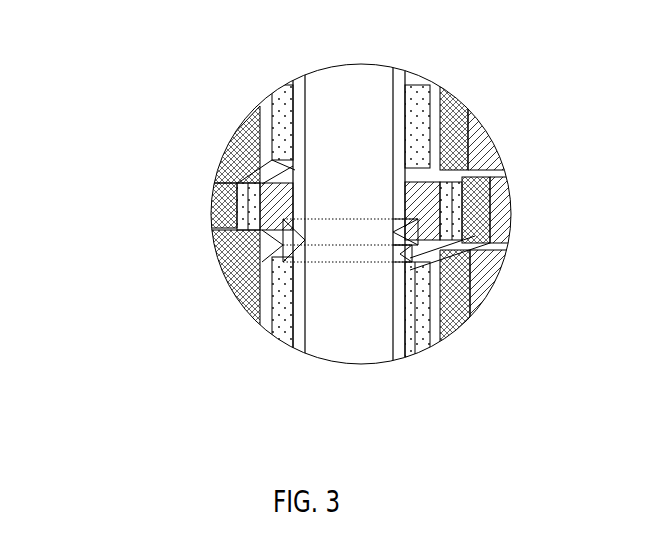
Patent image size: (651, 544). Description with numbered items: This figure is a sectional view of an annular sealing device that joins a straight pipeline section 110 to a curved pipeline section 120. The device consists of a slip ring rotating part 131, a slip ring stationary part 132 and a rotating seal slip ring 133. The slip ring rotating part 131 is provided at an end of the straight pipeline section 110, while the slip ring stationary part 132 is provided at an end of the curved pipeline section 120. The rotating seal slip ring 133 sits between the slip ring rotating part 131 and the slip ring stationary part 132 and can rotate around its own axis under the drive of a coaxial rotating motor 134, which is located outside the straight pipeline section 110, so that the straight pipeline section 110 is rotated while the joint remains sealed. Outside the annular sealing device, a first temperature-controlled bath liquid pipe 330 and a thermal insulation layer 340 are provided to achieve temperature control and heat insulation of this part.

The straight pipeline section 110 is at (336, 131).
The curved pipeline section 120 is at (363, 311).
The slip ring rotating part 131 is at (400, 229).
The slip ring stationary part 132 is at (400, 264).
The rotating seal slip ring 133 is at (338, 240).
The coaxial rotating motor 134 is at (418, 198).
The first temperature-controlled bath liquid pipe 330 is at (262, 247).
The thermal insulation layer 340 is at (244, 295).